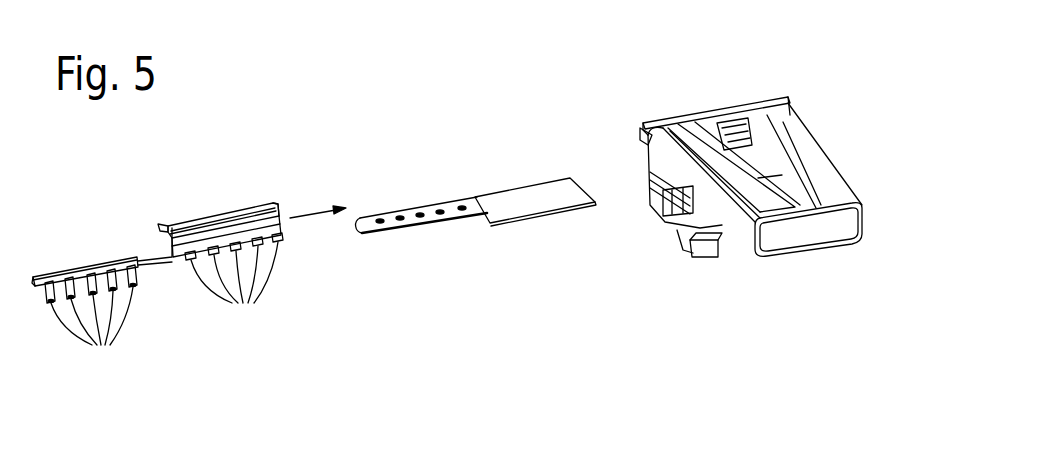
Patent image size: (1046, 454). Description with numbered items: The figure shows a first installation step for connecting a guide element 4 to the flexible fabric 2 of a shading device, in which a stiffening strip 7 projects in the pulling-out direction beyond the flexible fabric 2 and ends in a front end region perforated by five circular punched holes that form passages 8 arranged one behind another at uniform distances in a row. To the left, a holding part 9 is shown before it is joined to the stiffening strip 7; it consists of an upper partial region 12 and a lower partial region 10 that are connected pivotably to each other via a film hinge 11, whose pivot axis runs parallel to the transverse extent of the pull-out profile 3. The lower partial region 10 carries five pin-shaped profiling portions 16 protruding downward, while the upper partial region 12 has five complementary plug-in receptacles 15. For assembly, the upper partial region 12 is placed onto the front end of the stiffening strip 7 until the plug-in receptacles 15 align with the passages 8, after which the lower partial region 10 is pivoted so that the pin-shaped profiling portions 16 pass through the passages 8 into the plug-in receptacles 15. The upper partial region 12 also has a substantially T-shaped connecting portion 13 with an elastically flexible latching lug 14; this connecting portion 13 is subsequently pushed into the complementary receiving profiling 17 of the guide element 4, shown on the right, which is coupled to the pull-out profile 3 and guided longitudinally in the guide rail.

The flexible fabric 2 is at (550, 205).
The pull-out profile 3 is at (814, 250).
The guide element 4 is at (690, 98).
The stiffening strip 7 is at (465, 200).
The passages 8 is at (380, 219).
The holding part 9 is at (198, 197).
The lower partial region 10 is at (98, 266).
The film hinge 11 is at (168, 285).
The upper partial region 12 is at (281, 219).
The connecting portion 13 is at (235, 215).
The latching lug 14 is at (157, 226).
The plug-in receptacles 15 is at (234, 282).
The pin-shaped profiling portions 16 is at (91, 320).
The receiving profiling 17 is at (632, 130).